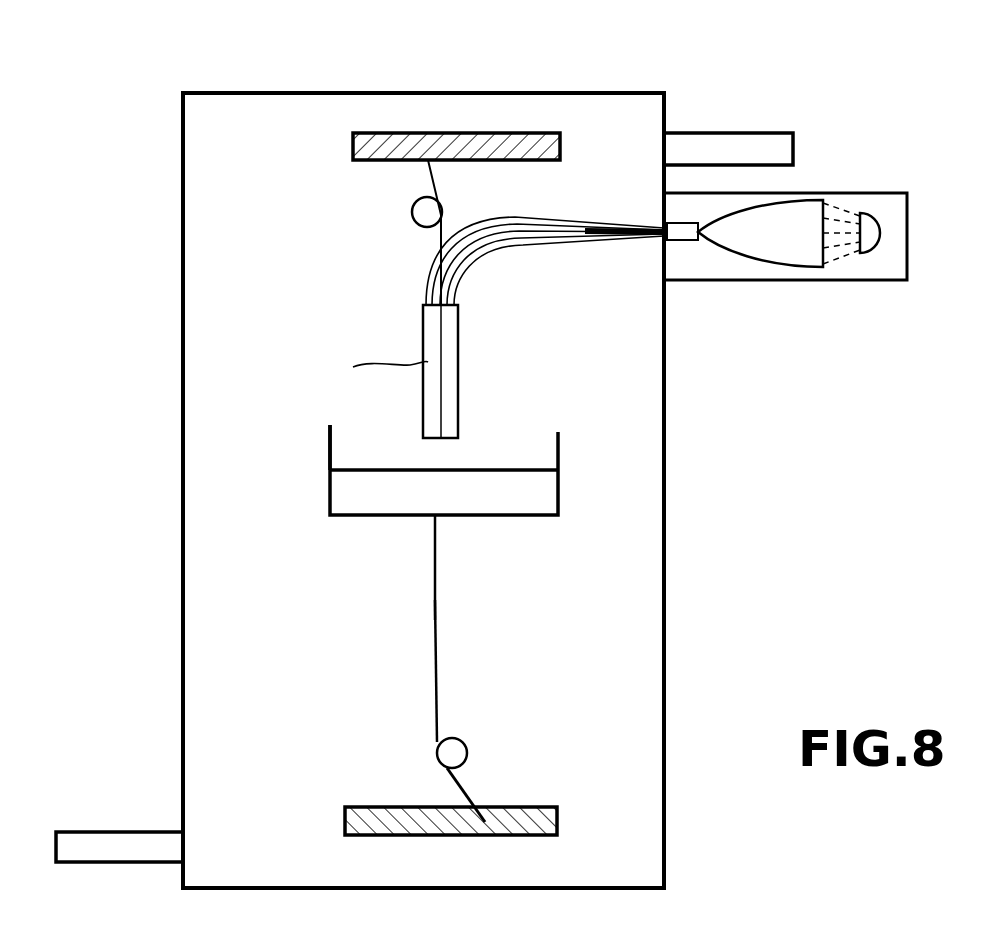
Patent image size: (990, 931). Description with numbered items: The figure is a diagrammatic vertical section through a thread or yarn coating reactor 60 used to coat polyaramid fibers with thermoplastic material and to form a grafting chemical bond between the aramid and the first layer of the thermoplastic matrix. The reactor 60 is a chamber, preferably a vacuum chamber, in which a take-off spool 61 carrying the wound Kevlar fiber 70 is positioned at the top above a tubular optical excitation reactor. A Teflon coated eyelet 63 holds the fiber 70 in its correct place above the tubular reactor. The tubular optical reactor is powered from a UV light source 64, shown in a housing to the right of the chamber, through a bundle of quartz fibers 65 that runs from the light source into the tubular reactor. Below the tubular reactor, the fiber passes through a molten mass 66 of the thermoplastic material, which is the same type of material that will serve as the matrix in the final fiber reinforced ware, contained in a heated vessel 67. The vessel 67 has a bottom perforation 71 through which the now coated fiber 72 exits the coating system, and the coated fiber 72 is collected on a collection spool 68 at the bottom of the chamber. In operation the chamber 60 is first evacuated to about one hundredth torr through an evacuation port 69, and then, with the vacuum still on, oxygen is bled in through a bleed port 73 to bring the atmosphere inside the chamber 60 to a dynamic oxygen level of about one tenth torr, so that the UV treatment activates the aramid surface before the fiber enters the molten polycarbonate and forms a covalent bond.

The reactor 60 is at (688, 497).
The take-off spool 61 is at (355, 153).
The Teflon coated eyelet 63 is at (427, 212).
The UV light source 64 is at (872, 228).
The bundle of quartz fibers 65 is at (607, 226).
The molten mass 66 is at (522, 466).
The heated vessel 67 is at (330, 447).
The collection spool 68 is at (528, 807).
The lower bar 69 is at (103, 838).
The Kevlar fiber 70 is at (440, 178).
The bottom perforation 71 is at (433, 517).
The coated fiber 72 is at (436, 610).
The bleed port 73 is at (793, 140).